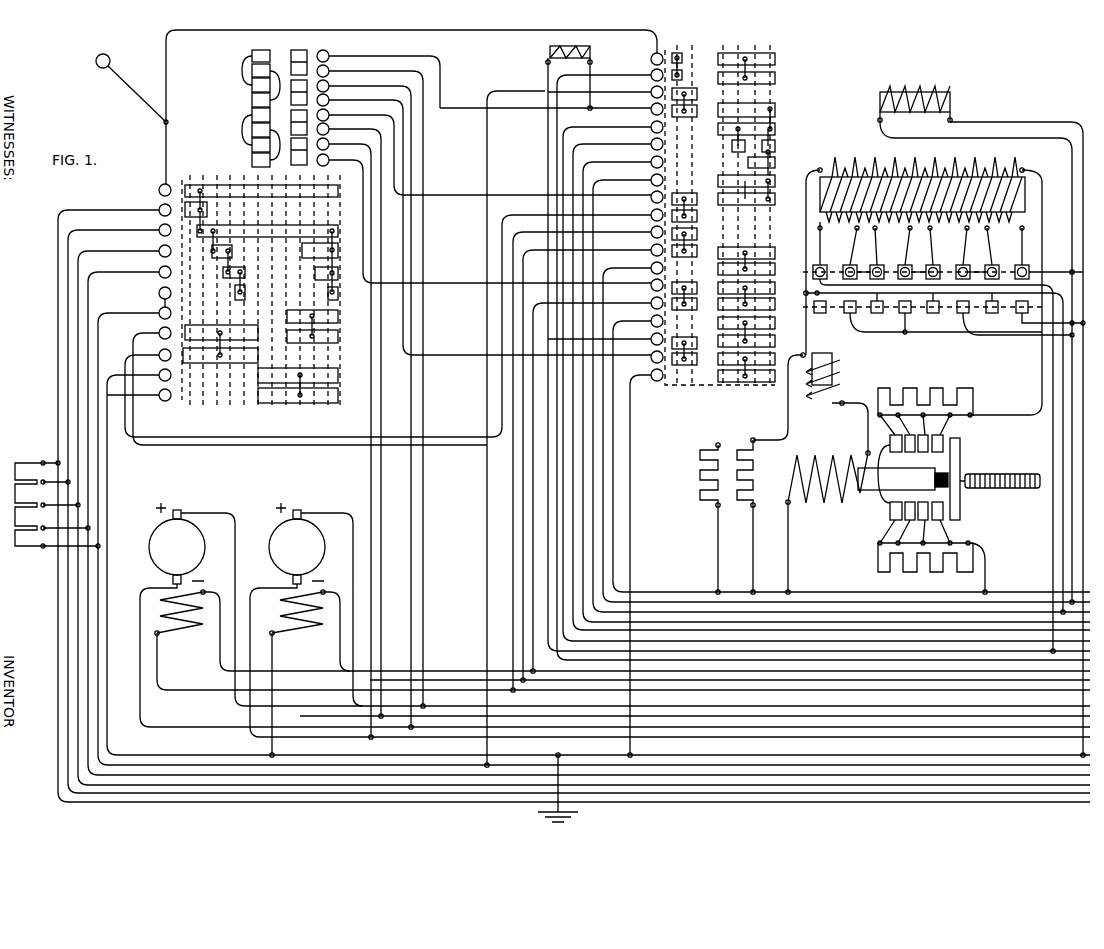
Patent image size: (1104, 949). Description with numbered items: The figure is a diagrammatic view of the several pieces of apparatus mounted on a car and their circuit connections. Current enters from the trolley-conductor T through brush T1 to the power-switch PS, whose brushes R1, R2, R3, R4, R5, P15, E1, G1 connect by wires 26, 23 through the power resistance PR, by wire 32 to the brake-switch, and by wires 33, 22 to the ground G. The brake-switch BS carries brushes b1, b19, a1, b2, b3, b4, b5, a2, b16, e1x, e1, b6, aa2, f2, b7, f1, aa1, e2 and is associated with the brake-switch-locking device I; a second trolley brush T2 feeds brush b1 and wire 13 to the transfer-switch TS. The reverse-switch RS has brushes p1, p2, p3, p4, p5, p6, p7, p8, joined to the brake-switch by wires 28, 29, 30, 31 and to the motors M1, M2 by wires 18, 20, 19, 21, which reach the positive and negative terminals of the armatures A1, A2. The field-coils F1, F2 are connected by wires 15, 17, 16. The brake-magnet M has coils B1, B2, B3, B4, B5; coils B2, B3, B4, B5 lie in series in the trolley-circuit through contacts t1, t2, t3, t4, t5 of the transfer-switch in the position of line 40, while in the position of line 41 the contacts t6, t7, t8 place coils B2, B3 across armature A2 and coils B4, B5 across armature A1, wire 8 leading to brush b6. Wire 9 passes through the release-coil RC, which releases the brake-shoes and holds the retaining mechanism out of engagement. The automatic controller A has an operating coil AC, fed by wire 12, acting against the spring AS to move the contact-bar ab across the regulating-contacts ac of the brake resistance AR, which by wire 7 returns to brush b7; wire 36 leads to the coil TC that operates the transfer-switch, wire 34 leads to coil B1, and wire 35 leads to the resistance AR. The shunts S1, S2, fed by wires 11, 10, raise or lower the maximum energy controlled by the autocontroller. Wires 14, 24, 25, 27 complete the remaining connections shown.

The trolley-conductor T is at (132, 89).
The brush T1 is at (154, 184).
The brush T2 is at (645, 52).
The reverse-switch RS is at (302, 44).
The power-switch PS is at (283, 178).
The power resistance PR is at (56, 495).
The brush p1 is at (378, 74).
The brush p2 is at (371, 381).
The brush p3 is at (365, 399).
The brush p4 is at (365, 219).
The brush p5 is at (360, 147).
The brush p6 is at (350, 415).
The brush p7 is at (345, 433).
The brush p8 is at (345, 213).
The terminal R1 is at (574, 501).
The brush R2 is at (579, 507).
The terminal R3 is at (584, 513).
The terminal R4 is at (589, 519).
The brush R5 is at (594, 524).
The brush P15 is at (299, 384).
The brush E1 is at (150, 354).
The brush G1 is at (598, 562).
The motor M1 is at (615, 603).
The motor M2 is at (670, 608).
The armature A1 is at (177, 547).
The armature A2 is at (297, 547).
The field-coil F1 is at (622, 640).
The field-coil F2 is at (310, 673).
The brake-switch-locking device I is at (548, 48).
The brake-switch BS is at (720, 215).
The release-coil RC is at (981, 411).
The coil of brake-magnet B1 is at (925, 170).
The coil of brake-magnet B2 is at (838, 243).
The coil of brake-magnet B3 is at (892, 245).
The coil of brake-magnet B4 is at (948, 245).
The coil of brake-magnet B5 is at (1004, 245).
The brake-magnet M is at (1032, 183).
The contact of transfer-switch t1 is at (812, 266).
The contacts of transfer-switch t2 is at (863, 263).
The contacts of transfer-switch t3 is at (919, 263).
The contacts of transfer-switch t4 is at (977, 263).
The contact of transfer-switch t5 is at (1030, 270).
The contacts of transfer-switch t6 is at (946, 309).
The contacts of transfer-switch t7 is at (849, 318).
The contacts of transfer-switch t8 is at (962, 318).
The coil operating transfer-switch TC is at (835, 378).
The transfer-switch TS is at (938, 370).
The brake resistance AR is at (972, 408).
The operating coil of automatic controller AC is at (827, 514).
The automatic controller A is at (860, 504).
The contact-bar ab is at (962, 455).
The regulating-contacts ac is at (896, 529).
The spring AS is at (1000, 491).
The shunt S1 is at (713, 442).
The shunt S2 is at (751, 438).
The ground G is at (562, 790).
The brush b1 is at (823, 360).
The brush b19 is at (605, 87).
The brush a1 is at (640, 104).
The brush b2 is at (826, 376).
The brush b3 is at (831, 379).
The brush b4 is at (836, 384).
The brush b5 is at (841, 388).
The brush a2 is at (640, 192).
The brush b16 is at (637, 210).
The brush e1x is at (587, 454).
The brush e1 is at (592, 458).
The brush b6 is at (846, 427).
The brush aa2 is at (637, 280).
The brush f2 is at (597, 480).
The brush b7 is at (851, 449).
The brush f1 is at (605, 334).
The brush aa1 is at (637, 352).
The brush e2 is at (640, 558).
The wire 7 is at (830, 602).
The wire 8 is at (853, 612).
The wire 9 is at (870, 622).
The wire 10 is at (888, 630).
The wire 11 is at (942, 632).
The wire 12 is at (970, 641).
The wire 13 is at (998, 651).
The wire 14 is at (1020, 663).
The wire 15 is at (830, 668).
The wire 16 is at (862, 690).
The wire 17 is at (885, 706).
The wire 18 is at (923, 703).
The wire 19 is at (953, 710).
The wire 20 is at (980, 727).
The wire 21 is at (1008, 737).
The wire 22 is at (868, 750).
The wire 23 is at (906, 765).
The wire 24 is at (950, 775).
The wire 25 is at (962, 793).
The wire 26 is at (1003, 802).
The wire 27 is at (1038, 817).
The wire 28 is at (545, 99).
The wire 29 is at (527, 186).
The wire 30 is at (512, 274).
The wire 31 is at (532, 346).
The wire 32 is at (388, 326).
The wire 33 is at (495, 429).
The wire 34 is at (779, 388).
The wire 35 is at (1020, 427).
The wire 36 is at (851, 428).
The line 40 is at (932, 272).
The line 41 is at (923, 452).